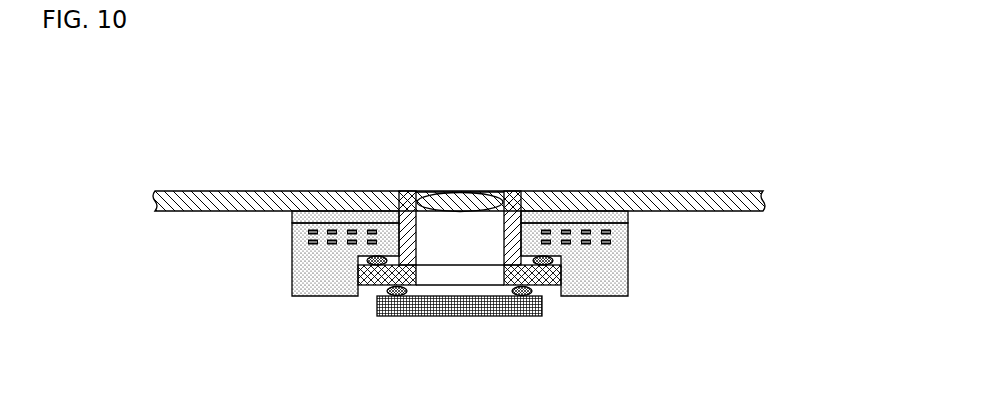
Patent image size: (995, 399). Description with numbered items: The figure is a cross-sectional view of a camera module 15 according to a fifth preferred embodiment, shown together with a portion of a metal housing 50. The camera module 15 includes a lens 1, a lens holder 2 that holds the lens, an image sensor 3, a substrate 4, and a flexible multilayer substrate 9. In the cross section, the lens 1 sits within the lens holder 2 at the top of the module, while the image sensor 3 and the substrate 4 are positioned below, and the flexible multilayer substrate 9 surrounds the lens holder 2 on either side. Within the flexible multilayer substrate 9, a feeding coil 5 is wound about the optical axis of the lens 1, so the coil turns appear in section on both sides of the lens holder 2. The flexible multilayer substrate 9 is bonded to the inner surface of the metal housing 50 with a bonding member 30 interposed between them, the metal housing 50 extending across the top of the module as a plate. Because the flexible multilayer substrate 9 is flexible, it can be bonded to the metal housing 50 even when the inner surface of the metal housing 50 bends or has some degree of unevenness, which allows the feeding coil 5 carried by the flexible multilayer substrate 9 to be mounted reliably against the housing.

The lens 1 is at (462, 201).
The lens holder 2 is at (512, 197).
The image sensor 3 is at (459, 317).
The substrate 4 is at (545, 284).
The feeding coil 5 is at (613, 241).
The flexible multilayer substrate 9 is at (615, 278).
The camera module 15 is at (608, 328).
The bonding member 30 is at (293, 217).
The metal housing 50 is at (647, 196).